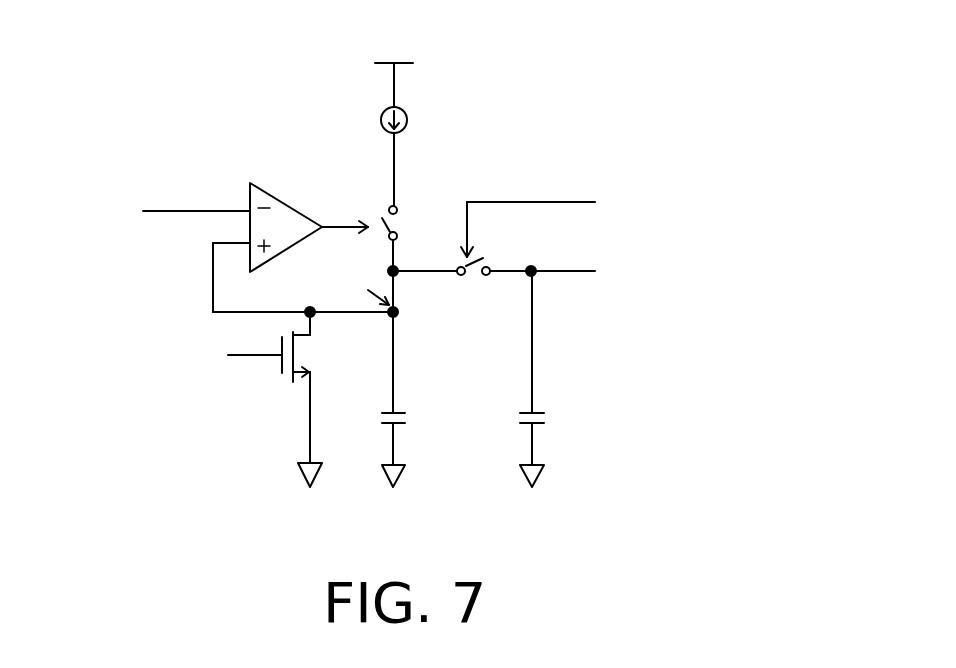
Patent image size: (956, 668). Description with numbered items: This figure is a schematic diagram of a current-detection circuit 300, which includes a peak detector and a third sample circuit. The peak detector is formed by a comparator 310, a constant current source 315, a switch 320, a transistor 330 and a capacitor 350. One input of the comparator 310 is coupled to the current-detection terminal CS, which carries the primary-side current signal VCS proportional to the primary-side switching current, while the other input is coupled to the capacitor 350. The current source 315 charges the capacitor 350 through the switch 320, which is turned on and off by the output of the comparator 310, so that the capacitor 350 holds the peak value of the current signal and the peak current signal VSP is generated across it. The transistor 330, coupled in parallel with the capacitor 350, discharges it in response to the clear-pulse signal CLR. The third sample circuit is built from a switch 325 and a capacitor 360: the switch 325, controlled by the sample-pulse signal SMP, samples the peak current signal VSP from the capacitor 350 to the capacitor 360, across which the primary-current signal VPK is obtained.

The current-detection circuit 300 is at (758, 527).
The comparator 310 is at (287, 205).
The current source 315 is at (381, 128).
The switch 320 is at (396, 226).
The switch 325 is at (492, 260).
The transistor 330 is at (296, 353).
The capacitor 350 is at (400, 412).
The capacitor 360 is at (540, 412).